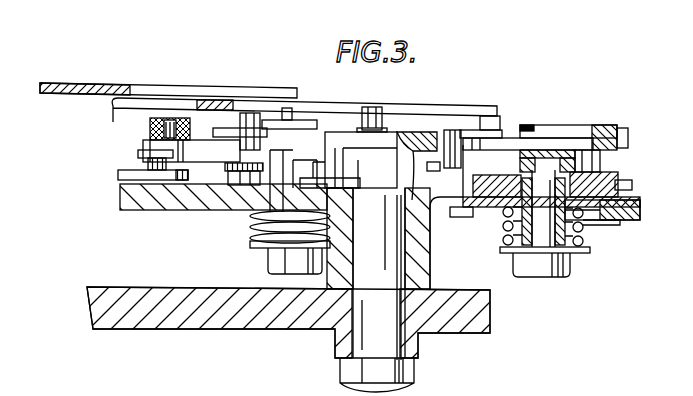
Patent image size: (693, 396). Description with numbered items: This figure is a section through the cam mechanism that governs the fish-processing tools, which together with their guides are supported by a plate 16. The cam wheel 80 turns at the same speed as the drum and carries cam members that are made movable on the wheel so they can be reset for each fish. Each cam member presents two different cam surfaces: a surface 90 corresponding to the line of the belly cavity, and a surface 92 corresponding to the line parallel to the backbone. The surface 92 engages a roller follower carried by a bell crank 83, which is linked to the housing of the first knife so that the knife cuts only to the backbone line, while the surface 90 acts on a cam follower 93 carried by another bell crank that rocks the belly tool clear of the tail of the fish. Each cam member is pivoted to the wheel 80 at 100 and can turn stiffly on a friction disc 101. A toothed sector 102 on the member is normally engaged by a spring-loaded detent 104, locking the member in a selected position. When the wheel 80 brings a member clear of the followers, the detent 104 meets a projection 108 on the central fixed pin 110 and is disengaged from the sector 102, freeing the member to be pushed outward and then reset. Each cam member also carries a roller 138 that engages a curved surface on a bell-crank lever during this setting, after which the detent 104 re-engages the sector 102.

The plate 16 is at (145, 294).
The cam wheel 80 is at (136, 196).
The bell crank 83 is at (220, 136).
The cam surface 90 is at (577, 130).
The cam surface 92 is at (562, 145).
The cam follower 93 is at (302, 122).
The pivot 100 is at (537, 238).
The friction disc 101 is at (500, 204).
The toothed sector 102 is at (236, 168).
The spring-loaded detent 104 is at (433, 165).
The projection 108 is at (397, 132).
The central fixed pin 110 is at (385, 280).
The roller 138 is at (130, 175).